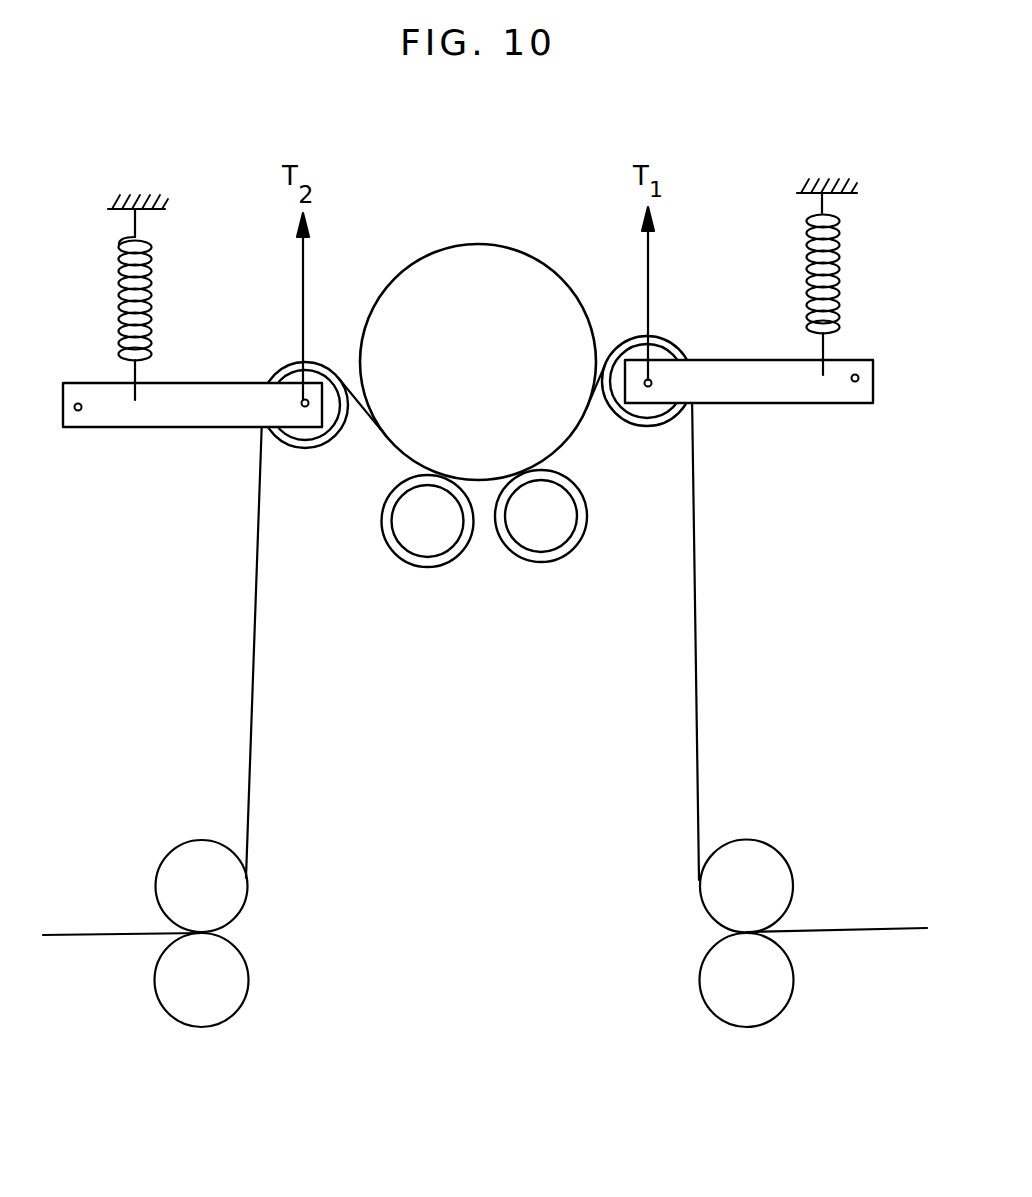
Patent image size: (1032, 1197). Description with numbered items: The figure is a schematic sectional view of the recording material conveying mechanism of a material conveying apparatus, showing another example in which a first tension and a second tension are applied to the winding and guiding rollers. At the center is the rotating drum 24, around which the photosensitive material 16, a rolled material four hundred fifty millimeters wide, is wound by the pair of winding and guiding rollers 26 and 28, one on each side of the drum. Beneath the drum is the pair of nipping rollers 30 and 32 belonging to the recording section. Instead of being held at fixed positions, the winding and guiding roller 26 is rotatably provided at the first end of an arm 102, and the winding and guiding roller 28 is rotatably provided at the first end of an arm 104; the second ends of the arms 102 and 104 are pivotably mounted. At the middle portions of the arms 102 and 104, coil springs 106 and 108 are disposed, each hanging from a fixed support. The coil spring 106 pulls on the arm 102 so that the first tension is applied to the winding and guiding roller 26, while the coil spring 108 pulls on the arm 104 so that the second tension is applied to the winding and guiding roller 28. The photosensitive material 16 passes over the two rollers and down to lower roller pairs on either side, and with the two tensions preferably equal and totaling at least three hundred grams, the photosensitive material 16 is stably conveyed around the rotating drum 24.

The photosensitive material 16 is at (697, 643).
The rotating drum 24 is at (413, 262).
The winding and guiding roller 26 is at (662, 337).
The winding and guiding roller 28 is at (305, 455).
The nipping roller 30 is at (552, 560).
The nipping roller 32 is at (423, 568).
The arm 102 is at (797, 403).
The arm 104 is at (162, 427).
The coil spring 106 is at (807, 278).
The coil spring 108 is at (153, 298).